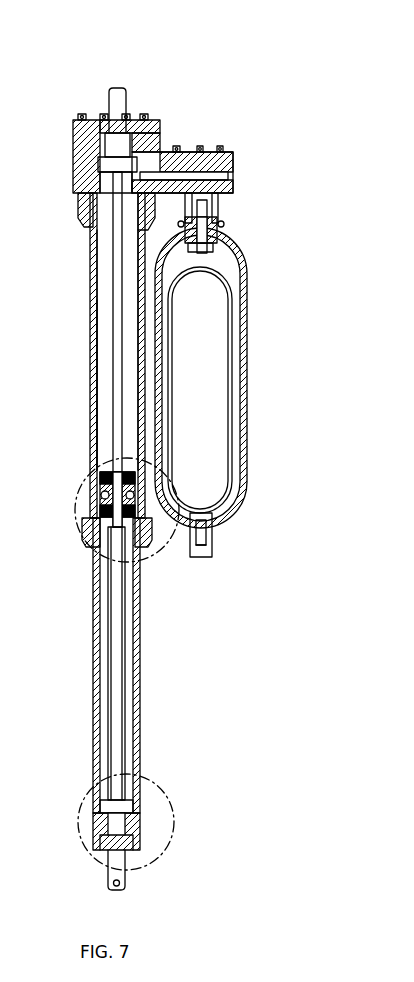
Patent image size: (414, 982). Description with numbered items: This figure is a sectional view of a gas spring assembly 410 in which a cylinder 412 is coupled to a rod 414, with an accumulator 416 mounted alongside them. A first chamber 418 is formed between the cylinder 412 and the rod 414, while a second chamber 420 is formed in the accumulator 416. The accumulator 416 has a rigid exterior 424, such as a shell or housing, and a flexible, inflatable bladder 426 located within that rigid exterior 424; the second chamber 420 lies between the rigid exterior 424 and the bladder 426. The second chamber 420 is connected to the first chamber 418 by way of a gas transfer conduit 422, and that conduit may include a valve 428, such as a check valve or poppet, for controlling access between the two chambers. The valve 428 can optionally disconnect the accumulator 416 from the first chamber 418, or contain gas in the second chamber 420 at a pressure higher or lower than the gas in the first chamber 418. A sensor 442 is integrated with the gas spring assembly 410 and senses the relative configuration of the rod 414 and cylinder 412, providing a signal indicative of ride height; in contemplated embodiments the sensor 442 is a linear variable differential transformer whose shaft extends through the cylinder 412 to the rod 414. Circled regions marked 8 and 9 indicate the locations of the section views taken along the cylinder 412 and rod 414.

The gas spring assembly 410 is at (78, 74).
The gas transfer conduit 422 is at (179, 170).
The valve 428 is at (226, 240).
The second chamber 420 is at (246, 266).
The accumulator 416 is at (214, 320).
The rigid exterior 424 is at (248, 382).
The bladder 426 is at (213, 432).
The sensor 442 is at (118, 258).
The cylinder 412 is at (92, 300).
The first chamber 418 is at (100, 370).
The rod 414 is at (96, 672).
The section 8- 8 is at (95, 457).
The section 9- 9 is at (90, 770).